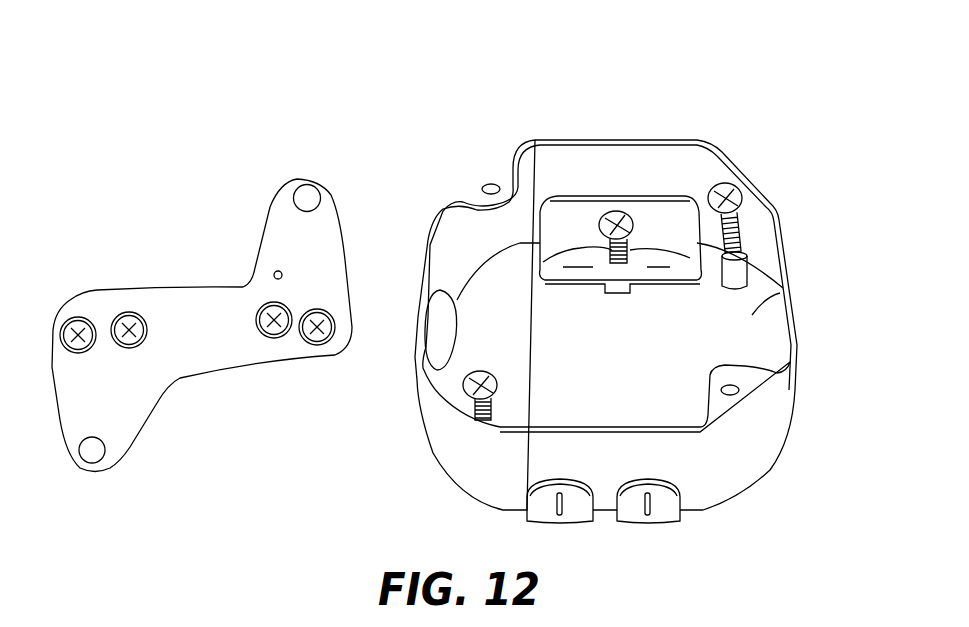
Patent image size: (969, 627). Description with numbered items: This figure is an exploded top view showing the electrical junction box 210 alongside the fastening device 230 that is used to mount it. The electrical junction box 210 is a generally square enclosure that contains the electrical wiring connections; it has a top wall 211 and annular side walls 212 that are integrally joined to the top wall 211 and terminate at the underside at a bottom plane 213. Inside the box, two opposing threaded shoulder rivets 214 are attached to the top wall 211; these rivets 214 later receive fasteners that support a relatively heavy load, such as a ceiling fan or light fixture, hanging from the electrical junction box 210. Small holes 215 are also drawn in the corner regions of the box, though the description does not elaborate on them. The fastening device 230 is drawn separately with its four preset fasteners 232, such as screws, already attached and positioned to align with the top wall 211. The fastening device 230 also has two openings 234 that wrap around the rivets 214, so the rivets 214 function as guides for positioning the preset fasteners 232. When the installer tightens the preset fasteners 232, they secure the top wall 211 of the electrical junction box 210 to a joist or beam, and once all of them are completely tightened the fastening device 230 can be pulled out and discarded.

The electrical junction box 210 is at (680, 139).
The top wall 211 is at (752, 315).
The annular side walls 212 is at (615, 165).
The bottom plane 213 is at (558, 138).
The threaded shoulder rivets 214 is at (747, 190).
The mounting hole 215 is at (488, 183).
The fastening device 230 is at (145, 287).
The preset fasteners 232 is at (83, 352).
The openings 234 is at (127, 456).